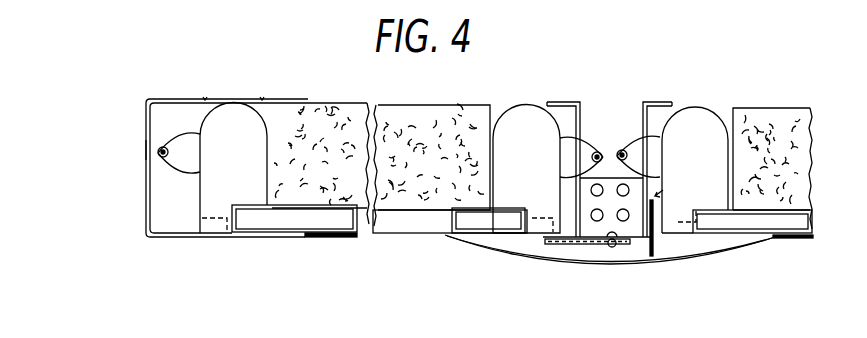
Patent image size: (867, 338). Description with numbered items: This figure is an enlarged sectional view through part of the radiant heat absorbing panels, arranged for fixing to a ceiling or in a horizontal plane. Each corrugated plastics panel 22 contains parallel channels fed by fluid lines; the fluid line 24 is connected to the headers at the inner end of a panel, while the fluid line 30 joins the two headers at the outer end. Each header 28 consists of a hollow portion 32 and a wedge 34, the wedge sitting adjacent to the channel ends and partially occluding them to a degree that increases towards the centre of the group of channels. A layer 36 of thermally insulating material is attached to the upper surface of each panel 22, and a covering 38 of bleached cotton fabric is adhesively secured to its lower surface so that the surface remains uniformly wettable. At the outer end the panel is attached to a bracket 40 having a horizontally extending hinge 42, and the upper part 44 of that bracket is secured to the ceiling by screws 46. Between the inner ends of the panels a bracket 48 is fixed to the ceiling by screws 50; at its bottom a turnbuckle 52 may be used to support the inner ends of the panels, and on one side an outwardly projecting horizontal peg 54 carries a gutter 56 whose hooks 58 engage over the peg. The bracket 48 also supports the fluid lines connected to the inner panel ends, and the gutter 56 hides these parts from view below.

The corrugated plastics panel 22 is at (407, 224).
The fluid line 24 is at (622, 149).
The header 28 is at (200, 204).
The fluid line 30 is at (165, 160).
The hollow portion 32 is at (220, 164).
The wedge 34 is at (214, 225).
The layer of thermally insulating material 36 is at (319, 112).
The covering of bleached cotton fabric 38 is at (318, 238).
The bracket 40 is at (146, 150).
The hinge 42 is at (150, 99).
The upper part of bracket 44 is at (158, 99).
The screws 46 is at (262, 96).
The bracket 48 is at (620, 247).
The screws 50 is at (656, 96).
The turnbuckle 52 is at (543, 256).
The peg 54 is at (671, 225).
The gutter 56 is at (551, 262).
The hook 58 is at (666, 226).